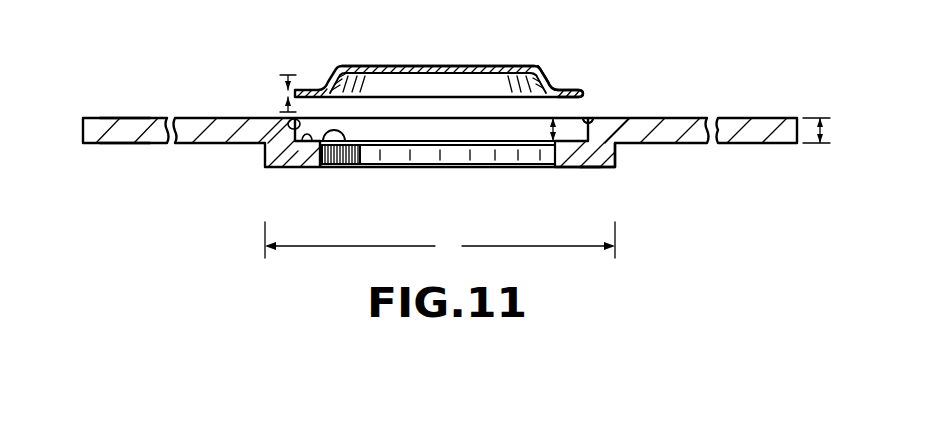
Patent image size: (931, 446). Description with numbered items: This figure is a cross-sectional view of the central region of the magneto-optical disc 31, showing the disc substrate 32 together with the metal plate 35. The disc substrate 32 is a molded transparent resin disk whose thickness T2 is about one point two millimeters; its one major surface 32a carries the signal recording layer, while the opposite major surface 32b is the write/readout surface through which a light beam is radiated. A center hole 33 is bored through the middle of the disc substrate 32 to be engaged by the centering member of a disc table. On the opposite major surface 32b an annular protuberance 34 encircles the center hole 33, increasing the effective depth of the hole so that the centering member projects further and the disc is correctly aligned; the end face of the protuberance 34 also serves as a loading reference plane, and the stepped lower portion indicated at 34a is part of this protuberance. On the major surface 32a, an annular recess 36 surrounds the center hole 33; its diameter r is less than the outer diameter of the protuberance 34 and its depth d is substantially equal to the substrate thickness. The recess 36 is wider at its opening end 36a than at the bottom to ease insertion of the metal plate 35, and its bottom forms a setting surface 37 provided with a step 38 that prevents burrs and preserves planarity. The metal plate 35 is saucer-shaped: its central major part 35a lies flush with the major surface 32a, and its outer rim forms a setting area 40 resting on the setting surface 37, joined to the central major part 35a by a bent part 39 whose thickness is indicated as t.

The magneto-optical disc 31 is at (706, 89).
The disc substrate 32 is at (100, 118).
The major surface 32a is at (136, 118).
The opposite major surface 32b is at (118, 143).
The center hole 33 is at (548, 158).
The annular protuberance 34 is at (617, 160).
The lower surface of bottom wall 34a is at (578, 167).
The metal plate 35 is at (521, 66).
The central major part 35a is at (365, 66).
The annular recess 36 is at (288, 121).
The opening end 36a is at (590, 117).
The setting surface 37 is at (307, 146).
The step 38 is at (347, 158).
The bent part 39 is at (549, 83).
The setting area 40 is at (568, 90).